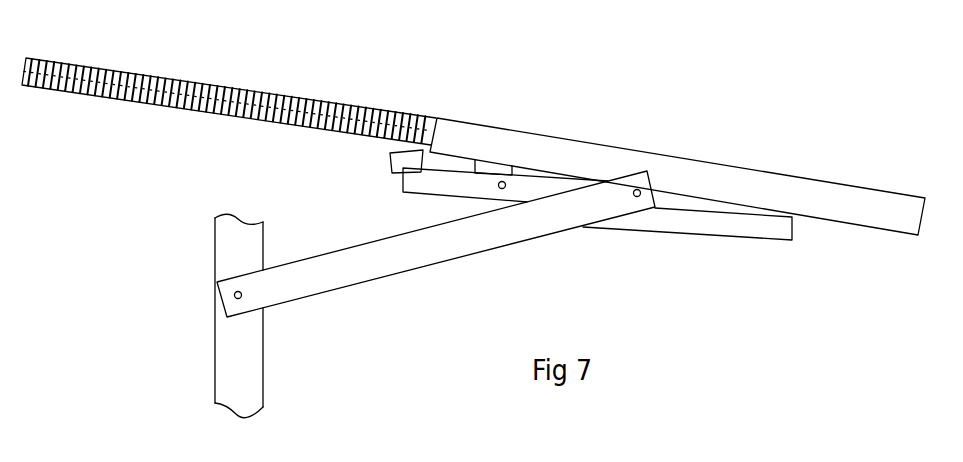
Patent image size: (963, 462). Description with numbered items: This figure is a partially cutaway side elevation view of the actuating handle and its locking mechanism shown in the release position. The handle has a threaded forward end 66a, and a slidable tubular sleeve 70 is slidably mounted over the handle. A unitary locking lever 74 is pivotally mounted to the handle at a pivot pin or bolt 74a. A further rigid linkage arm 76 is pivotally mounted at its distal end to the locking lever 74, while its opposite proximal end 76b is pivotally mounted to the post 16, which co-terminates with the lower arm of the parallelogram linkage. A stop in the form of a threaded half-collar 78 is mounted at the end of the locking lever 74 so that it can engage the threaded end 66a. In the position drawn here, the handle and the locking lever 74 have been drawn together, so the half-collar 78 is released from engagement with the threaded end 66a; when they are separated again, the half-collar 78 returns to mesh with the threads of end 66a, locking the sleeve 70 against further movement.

The post 16 is at (250, 392).
The threaded forward end 66a is at (185, 85).
The slidable tubular sleeve 70 is at (878, 208).
The locking lever 74 is at (690, 227).
The pivot pin 74a is at (500, 188).
The rigid linkage arm 76 is at (422, 253).
The proximal end 76b is at (272, 293).
The half-collar 78 is at (390, 165).